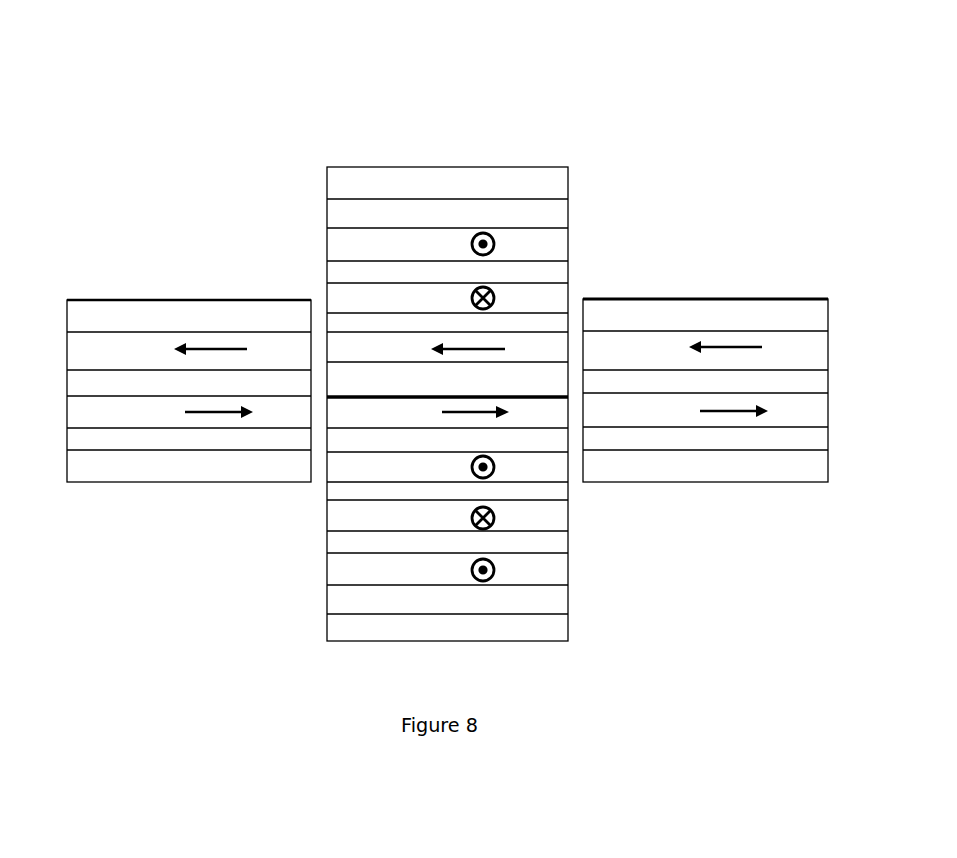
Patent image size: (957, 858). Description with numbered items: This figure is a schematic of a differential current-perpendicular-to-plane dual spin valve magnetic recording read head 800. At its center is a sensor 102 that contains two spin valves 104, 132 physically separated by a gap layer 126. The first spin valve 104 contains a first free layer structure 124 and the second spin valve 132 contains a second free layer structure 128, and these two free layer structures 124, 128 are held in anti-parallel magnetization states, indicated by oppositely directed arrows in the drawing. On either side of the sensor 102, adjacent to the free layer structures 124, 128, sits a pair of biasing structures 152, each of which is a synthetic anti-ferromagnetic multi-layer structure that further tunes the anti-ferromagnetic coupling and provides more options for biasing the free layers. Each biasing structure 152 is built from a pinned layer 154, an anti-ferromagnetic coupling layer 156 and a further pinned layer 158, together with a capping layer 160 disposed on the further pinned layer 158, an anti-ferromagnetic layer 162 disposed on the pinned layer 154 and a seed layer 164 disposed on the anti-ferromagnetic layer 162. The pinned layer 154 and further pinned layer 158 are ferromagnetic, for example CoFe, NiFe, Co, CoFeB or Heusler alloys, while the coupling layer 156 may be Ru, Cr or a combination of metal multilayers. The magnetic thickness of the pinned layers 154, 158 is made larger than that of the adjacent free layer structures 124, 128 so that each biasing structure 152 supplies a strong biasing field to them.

The differential CPP dual spin valve magnetic recording read head 800 is at (302, 68).
The sensor 102 is at (570, 153).
The biasing structure 152 is at (312, 290).
The second spin valve 132 is at (506, 357).
The first spin valve 104 is at (504, 399).
The second free layer structure 128 is at (523, 352).
The gap layer 126 is at (543, 378).
The first free layer structure 124 is at (553, 413).
The capping layer 160 is at (84, 318).
The further pinned layer 158 is at (84, 353).
The anti-ferromagnetic coupling layer 156 is at (84, 384).
The pinned layer 154 is at (84, 413).
The anti-ferromagnetic layer 162 is at (84, 439).
The seed layer 164 is at (84, 467).